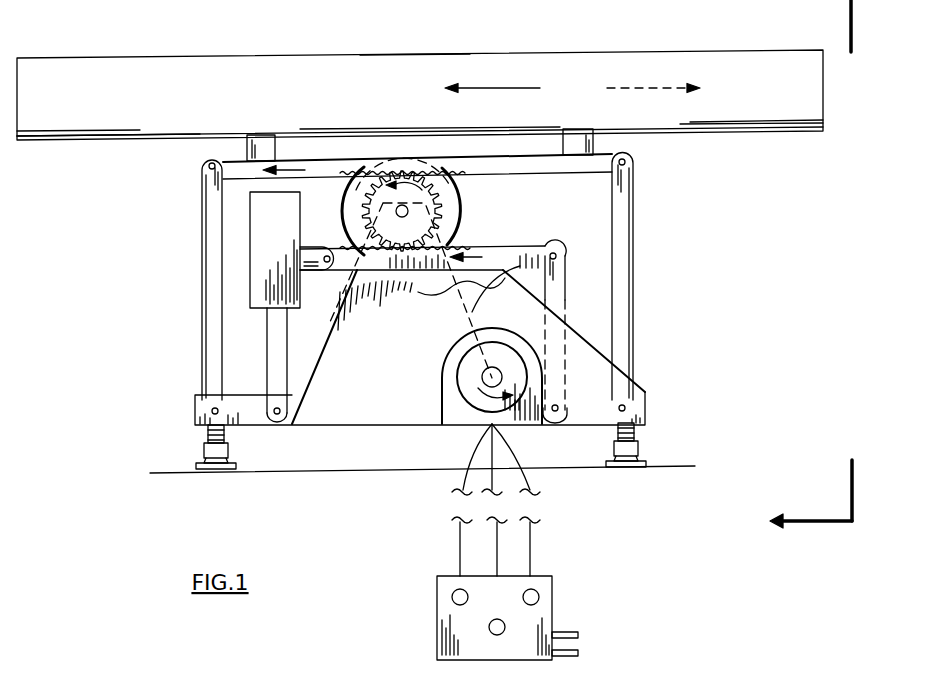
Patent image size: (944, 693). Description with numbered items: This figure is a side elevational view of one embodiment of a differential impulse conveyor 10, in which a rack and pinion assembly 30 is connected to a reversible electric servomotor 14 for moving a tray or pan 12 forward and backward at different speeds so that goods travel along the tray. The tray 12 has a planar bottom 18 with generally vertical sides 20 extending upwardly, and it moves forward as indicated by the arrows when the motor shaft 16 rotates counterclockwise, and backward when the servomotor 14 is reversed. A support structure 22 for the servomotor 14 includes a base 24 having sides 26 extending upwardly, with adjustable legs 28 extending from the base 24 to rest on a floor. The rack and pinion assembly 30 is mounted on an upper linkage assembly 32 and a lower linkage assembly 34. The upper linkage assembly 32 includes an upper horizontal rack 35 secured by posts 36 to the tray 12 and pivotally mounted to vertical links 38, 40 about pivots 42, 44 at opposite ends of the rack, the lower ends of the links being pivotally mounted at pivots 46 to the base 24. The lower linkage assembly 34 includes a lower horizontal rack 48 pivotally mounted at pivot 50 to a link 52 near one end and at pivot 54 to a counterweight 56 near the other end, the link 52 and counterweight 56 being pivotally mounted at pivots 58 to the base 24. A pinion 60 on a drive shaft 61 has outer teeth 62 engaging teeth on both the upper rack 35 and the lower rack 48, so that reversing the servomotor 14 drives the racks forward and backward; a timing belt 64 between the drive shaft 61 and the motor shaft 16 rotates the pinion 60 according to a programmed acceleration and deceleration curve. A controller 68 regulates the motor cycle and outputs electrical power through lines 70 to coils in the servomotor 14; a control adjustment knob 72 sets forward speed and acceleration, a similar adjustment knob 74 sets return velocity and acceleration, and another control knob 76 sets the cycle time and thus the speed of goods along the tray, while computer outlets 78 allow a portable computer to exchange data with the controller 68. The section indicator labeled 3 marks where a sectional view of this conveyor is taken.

The section line for FIG. 3 is at (800, 267).
The differential impulse conveyor 10 is at (147, 185).
The tray or pan 12 is at (557, 63).
The reversible electric servomotor 14 is at (461, 413).
The motor shaft 16 is at (483, 372).
The planar bottom 18 is at (125, 137).
The vertical sides 20 is at (455, 52).
The support structure 22 is at (312, 470).
The base 24 is at (425, 420).
The sides 26 is at (468, 347).
The adjustable legs 28 is at (206, 450).
The rack and pinion assembly 30 is at (481, 213).
The upper linkage assembly 32 is at (440, 268).
The lower linkage assembly 34 is at (549, 240).
The upper horizontal rack 35 is at (445, 168).
The posts 36 is at (245, 145).
The vertical link 38 is at (193, 273).
The vertical link 40 is at (654, 268).
The pivot 42 is at (209, 164).
The pivot 44 is at (632, 158).
The pivots 46 is at (212, 408).
The lower horizontal rack 48 is at (475, 304).
The pivot 50 is at (560, 258).
The link 52 is at (421, 353).
The pivot 54 is at (340, 244).
The counterweight 56 is at (275, 307).
The pivots 58 is at (555, 418).
The pinion 60 is at (366, 178).
The drive shaft 61 is at (408, 209).
The outer teeth 62 is at (412, 174).
The timing belt 64 is at (405, 314).
The controller 68 is at (516, 630).
The lines 70 is at (459, 552).
The control adjustment knob 72 is at (540, 597).
The adjustment knob 74 is at (452, 597).
The control knob 76 is at (500, 635).
The computer outlets 78 is at (579, 635).